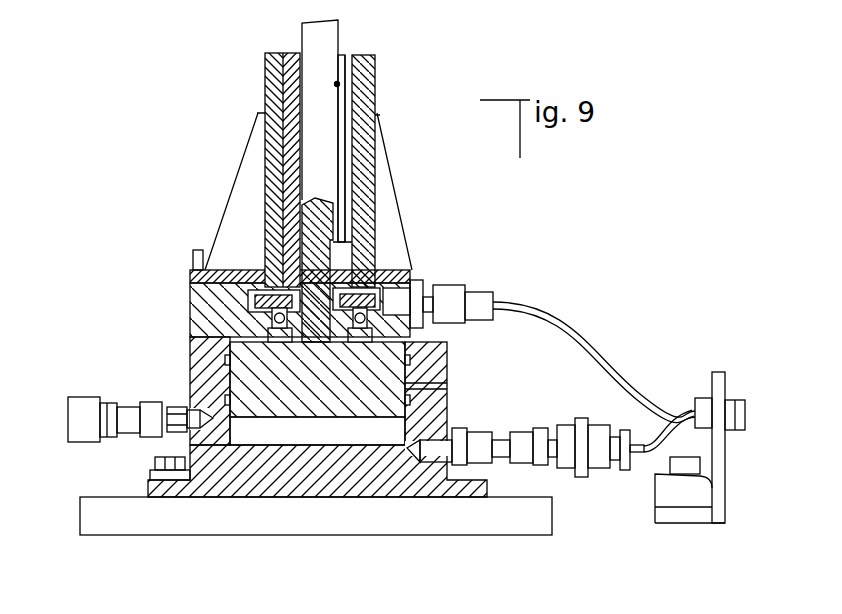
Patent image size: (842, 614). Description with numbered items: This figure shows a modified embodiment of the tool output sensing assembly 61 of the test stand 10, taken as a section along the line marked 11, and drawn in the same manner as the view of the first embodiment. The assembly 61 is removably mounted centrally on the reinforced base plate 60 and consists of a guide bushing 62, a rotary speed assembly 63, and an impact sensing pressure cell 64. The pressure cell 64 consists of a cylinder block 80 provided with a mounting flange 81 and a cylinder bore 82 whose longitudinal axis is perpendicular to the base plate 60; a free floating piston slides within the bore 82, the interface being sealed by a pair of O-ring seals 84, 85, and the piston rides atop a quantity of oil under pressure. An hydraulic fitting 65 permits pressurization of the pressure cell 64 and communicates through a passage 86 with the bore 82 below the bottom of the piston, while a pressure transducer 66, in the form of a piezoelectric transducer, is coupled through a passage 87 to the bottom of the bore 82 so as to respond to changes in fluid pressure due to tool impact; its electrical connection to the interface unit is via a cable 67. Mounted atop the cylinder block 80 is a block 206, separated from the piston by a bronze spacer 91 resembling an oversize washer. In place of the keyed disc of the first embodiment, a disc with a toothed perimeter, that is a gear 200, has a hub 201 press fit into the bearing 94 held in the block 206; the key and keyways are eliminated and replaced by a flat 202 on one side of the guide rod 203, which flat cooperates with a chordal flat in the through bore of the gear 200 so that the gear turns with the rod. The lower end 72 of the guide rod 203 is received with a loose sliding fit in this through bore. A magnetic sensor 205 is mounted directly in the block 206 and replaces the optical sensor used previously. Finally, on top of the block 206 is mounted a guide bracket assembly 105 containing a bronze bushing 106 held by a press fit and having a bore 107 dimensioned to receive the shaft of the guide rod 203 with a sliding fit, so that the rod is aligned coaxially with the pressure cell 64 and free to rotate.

The test stand 10 is at (50, 426).
The section line 11- 11 is at (158, 258).
The reinforced base plate 60 is at (345, 527).
The tool output sensing assembly 61 is at (278, 191).
The guide bushing 62 is at (405, 187).
The rotary speed assembly 63 is at (185, 280).
The impact sensing pressure cell 64 is at (182, 384).
The hydraulic fitting 65 is at (125, 405).
The pressure transducer 66 is at (522, 432).
The cable 67 is at (737, 400).
The lower end of the guide rod 72 is at (316, 254).
The cylinder block 80 is at (451, 393).
The mounting flange 81 is at (142, 484).
The cylinder bore 82 is at (252, 440).
The O-ring seal 84 is at (450, 357).
The O-ring seal 85 is at (447, 406).
The passage 86 is at (222, 432).
The passage 87 is at (396, 450).
The bronze spacer 91 is at (256, 348).
The bearing 94 is at (352, 348).
The guide bracket assembly 105 is at (380, 128).
The bronze bushing 106 is at (290, 72).
The bore 107 is at (340, 84).
The gear 200 is at (268, 292).
The hub 201 is at (317, 393).
The flat 202 is at (337, 252).
The guide rod 203 is at (335, 32).
The magnetic sensor 205 is at (443, 285).
The block 206 is at (190, 325).